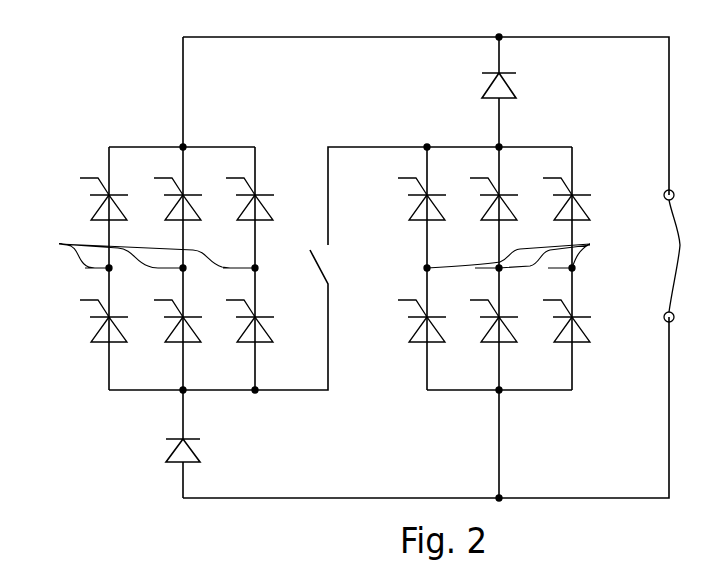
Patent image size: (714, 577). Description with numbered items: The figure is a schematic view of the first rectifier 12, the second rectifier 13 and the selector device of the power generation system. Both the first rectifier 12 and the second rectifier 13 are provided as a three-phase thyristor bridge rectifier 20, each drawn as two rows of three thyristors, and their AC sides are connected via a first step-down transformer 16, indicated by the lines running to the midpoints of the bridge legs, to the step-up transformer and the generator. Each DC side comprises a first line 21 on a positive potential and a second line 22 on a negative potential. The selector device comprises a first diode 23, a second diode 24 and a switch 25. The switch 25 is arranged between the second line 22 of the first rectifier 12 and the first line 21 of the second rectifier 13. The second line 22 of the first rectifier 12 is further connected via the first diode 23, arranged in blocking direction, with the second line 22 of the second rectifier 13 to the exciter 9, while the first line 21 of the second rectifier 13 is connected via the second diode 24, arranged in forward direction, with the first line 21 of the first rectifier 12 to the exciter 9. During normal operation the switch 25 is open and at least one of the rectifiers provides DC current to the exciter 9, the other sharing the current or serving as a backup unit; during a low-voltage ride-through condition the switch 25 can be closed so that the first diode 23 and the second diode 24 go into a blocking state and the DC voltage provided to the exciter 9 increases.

The exciter 9 is at (685, 256).
The first rectifier 12 is at (141, 137).
The second rectifier 13 is at (553, 136).
The first step-down transformer 16 is at (328, 249).
The three-phase thyristor bridge rectifier 20 is at (341, 232).
The first line 21 is at (207, 135).
The second line 22 is at (169, 405).
The first diode 23 is at (180, 455).
The second diode 24 is at (495, 82).
The switch 25 is at (334, 260).